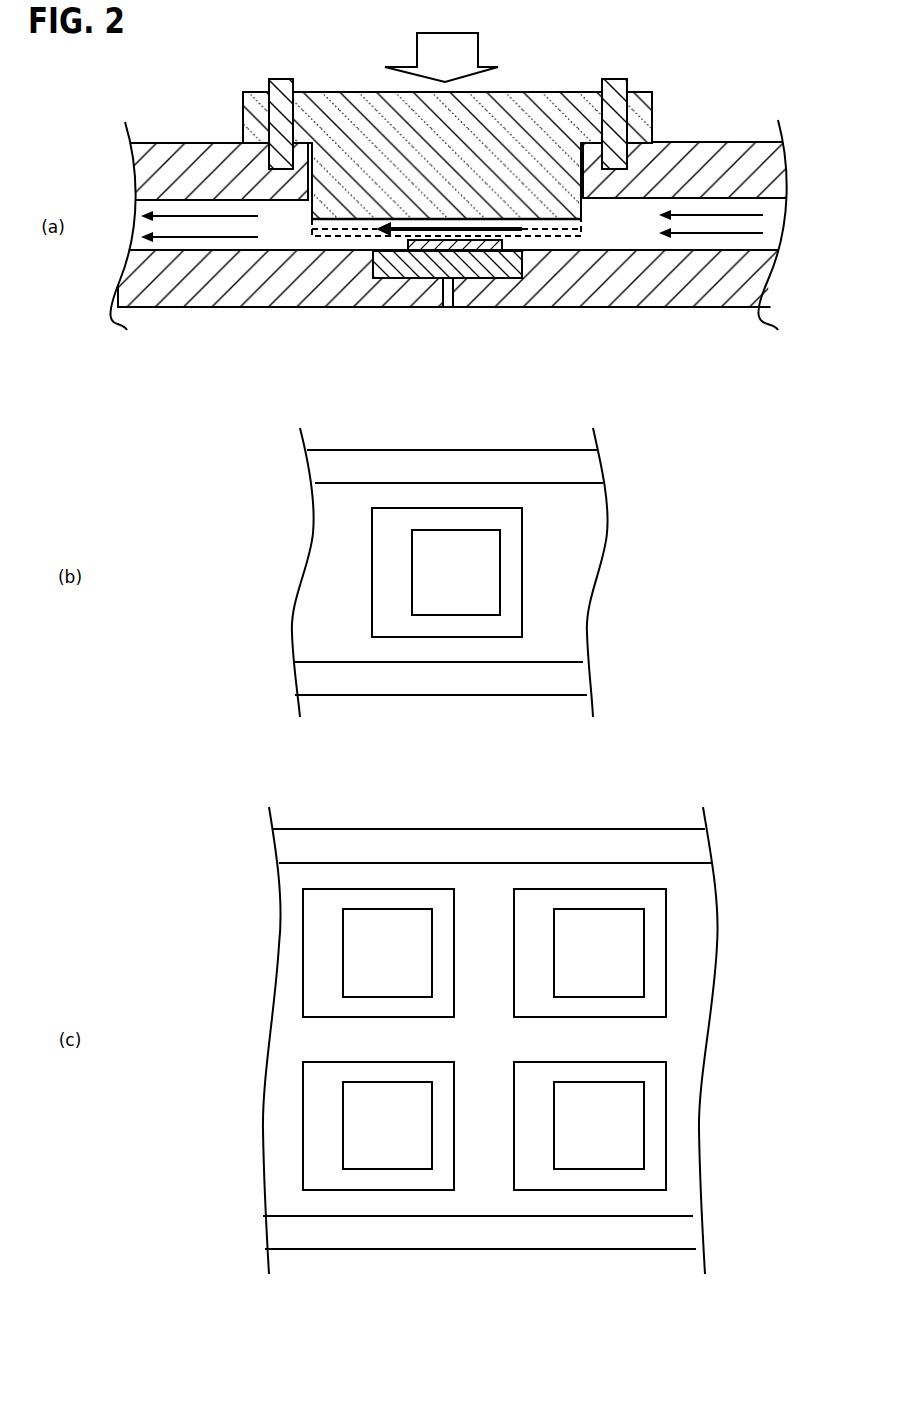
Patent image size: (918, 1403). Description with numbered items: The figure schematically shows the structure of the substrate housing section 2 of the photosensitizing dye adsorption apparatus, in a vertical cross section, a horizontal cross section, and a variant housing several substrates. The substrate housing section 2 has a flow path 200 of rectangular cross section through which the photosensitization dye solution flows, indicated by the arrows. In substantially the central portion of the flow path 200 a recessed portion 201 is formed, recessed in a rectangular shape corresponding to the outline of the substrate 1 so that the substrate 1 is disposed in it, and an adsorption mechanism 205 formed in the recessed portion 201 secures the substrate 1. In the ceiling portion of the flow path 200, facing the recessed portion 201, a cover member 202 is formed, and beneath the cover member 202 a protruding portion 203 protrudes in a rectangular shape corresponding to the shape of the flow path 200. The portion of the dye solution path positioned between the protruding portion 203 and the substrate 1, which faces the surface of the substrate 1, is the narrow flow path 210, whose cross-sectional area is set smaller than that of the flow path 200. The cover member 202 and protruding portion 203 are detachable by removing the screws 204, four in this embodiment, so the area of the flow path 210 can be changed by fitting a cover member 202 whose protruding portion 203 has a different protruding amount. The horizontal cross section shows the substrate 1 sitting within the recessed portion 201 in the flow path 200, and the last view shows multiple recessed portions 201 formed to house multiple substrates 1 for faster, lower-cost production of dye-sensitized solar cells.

The substrate 1 is at (397, 278).
The substrate housing section 2 is at (188, 121).
The flow path 200 is at (277, 243).
The recessed portion 201 is at (472, 282).
The cover member 202 is at (518, 92).
The protruding portion 203 is at (580, 208).
The screws 204 is at (287, 82).
The adsorption mechanism 205 is at (449, 307).
The flow path (narrow path) 210 is at (518, 243).